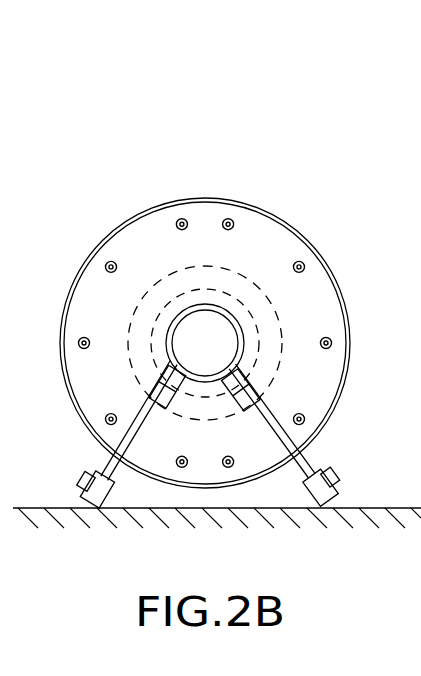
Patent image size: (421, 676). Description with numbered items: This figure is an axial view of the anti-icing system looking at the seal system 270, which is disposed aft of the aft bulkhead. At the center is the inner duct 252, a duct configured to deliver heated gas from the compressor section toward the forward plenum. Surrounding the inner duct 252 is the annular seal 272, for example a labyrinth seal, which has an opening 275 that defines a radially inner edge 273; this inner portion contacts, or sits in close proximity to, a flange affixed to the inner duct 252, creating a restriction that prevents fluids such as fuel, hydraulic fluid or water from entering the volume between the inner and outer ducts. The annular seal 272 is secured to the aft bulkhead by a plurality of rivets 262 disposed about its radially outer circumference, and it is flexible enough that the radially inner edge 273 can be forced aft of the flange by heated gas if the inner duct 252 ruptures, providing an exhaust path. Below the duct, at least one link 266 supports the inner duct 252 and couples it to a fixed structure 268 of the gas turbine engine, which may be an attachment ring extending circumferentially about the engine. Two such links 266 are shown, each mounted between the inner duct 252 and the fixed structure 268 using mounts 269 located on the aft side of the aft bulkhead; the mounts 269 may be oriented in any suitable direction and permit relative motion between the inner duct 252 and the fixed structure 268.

The seal system 270 is at (73, 123).
The annular seal 272 is at (138, 252).
The rivets 262 is at (231, 221).
The radially inner edge 273 is at (228, 293).
The inner duct 252 is at (243, 333).
The opening 275 is at (191, 312).
The link 266 is at (286, 440).
The mounts 269 is at (256, 391).
The fixed structure 268 is at (286, 511).